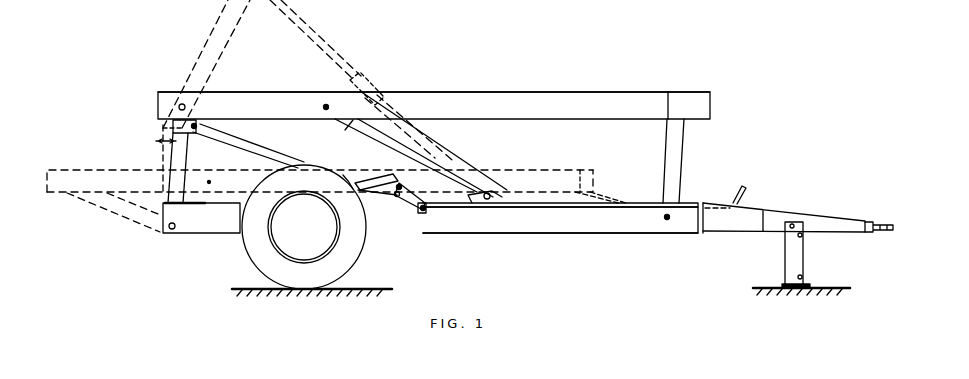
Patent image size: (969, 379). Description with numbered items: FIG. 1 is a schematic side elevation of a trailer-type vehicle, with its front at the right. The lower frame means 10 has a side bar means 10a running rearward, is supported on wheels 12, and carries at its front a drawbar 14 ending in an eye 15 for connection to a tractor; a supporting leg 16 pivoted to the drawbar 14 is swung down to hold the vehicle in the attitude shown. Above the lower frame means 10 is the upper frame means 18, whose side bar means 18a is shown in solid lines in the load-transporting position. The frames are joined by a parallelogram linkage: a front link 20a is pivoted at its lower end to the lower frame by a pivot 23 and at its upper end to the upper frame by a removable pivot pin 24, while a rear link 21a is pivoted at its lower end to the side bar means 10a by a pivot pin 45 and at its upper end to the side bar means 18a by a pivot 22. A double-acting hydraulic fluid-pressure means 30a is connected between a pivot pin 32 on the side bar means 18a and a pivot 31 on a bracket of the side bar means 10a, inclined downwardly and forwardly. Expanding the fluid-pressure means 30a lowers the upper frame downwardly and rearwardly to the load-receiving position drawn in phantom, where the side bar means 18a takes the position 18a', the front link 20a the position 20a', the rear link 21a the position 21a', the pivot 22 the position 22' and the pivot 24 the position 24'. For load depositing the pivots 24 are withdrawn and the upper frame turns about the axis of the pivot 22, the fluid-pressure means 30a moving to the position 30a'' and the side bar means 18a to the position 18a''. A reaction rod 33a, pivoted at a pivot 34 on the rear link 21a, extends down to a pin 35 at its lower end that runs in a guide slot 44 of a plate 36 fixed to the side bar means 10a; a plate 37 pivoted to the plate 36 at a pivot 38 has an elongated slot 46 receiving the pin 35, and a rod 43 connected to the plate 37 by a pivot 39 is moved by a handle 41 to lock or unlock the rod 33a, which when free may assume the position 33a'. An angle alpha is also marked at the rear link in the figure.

The lower frame means 10 is at (456, 244).
The side bar means 10a is at (220, 233).
The wheels 12 is at (356, 243).
The drawbar 14 is at (775, 213).
The eye 15 is at (883, 221).
The supporting leg 16 is at (803, 249).
The upper frame means 18 is at (507, 74).
The side bar means 18a is at (434, 93).
The side bar means in load-receiving position 18a' is at (320, 168).
The side bar means in load-depositing position 18a'' is at (212, 64).
The front link 20a is at (692, 161).
The front link in load-receiving position 20a' is at (605, 187).
The rear link 21a is at (193, 161).
The rear link in load-receiving position 21a' is at (113, 213).
The pivot 22 is at (196, 107).
The pivot in load-receiving position 22' is at (320, 170).
The horizontal pivot 23 is at (667, 220).
The pivot pin 24 is at (676, 93).
The pivot in load-receiving position 24' is at (586, 168).
The fluid-pressure means 30a is at (421, 145).
The fluid-pressure means in load-depositing position 30a'' is at (361, 80).
The pivot 31 is at (487, 200).
The pivot pin 32 is at (324, 107).
The reaction rod 33a is at (248, 146).
The reaction rod in load-receiving position 33a' is at (194, 212).
The pivot 34 is at (194, 128).
The pin 35 is at (382, 196).
The plate 36 is at (385, 177).
The plate 37 is at (418, 195).
The pivot 38 is at (401, 184).
The pivot 39 is at (426, 208).
The handle 41 is at (741, 186).
The elongated rod 43 is at (598, 207).
The guide slot 44 is at (355, 192).
The pivot pin 45 is at (172, 230).
The elongated slot 46 is at (399, 198).
The tilt angle alpha is at (159, 158).